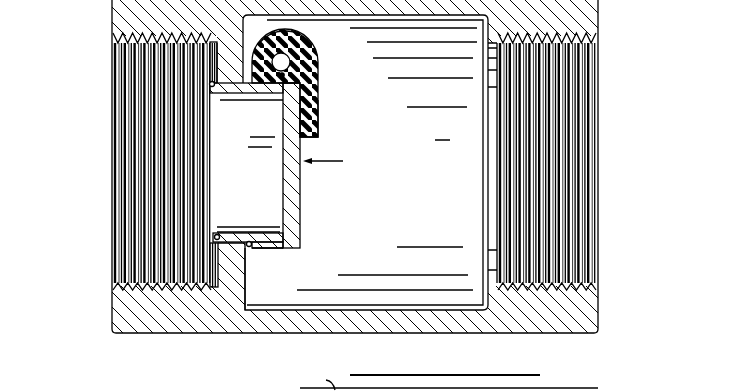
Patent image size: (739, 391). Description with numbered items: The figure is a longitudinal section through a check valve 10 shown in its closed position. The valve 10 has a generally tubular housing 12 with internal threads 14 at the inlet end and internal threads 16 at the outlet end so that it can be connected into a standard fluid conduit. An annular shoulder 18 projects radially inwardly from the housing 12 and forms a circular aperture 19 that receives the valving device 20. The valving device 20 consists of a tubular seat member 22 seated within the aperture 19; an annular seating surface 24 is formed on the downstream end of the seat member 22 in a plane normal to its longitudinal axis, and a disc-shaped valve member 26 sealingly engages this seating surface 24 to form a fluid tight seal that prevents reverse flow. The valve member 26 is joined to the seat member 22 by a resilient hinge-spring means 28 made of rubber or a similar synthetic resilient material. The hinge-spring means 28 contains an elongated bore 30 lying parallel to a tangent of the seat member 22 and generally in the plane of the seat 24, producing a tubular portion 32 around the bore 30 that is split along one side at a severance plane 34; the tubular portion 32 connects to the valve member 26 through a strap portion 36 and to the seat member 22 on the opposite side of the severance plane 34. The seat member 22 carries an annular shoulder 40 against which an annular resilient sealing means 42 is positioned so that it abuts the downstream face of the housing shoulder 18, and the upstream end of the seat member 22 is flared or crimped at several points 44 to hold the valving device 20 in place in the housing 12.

The valve 10 is at (90, 60).
The tubular housing 12 is at (177, 325).
The internal threads 14 is at (134, 278).
The internal threads 16 is at (588, 283).
The annular shoulder 18 is at (245, 72).
The circular aperture 19 is at (235, 250).
The valving device 20 is at (308, 248).
The tubular seat member 22 is at (252, 94).
The annular seating surface 24 is at (304, 86).
The disc-shaped valve member 26 is at (300, 203).
The hinge-spring means 28 is at (305, 79).
The elongated bore 30 is at (307, 33).
The tubular portion 32 is at (275, 50).
The severance plane 34 is at (281, 78).
The strap portion 36 is at (316, 118).
The annular shoulder 40 is at (264, 247).
The annular resilient sealing means 42 is at (248, 241).
The crimped points 44 is at (210, 85).